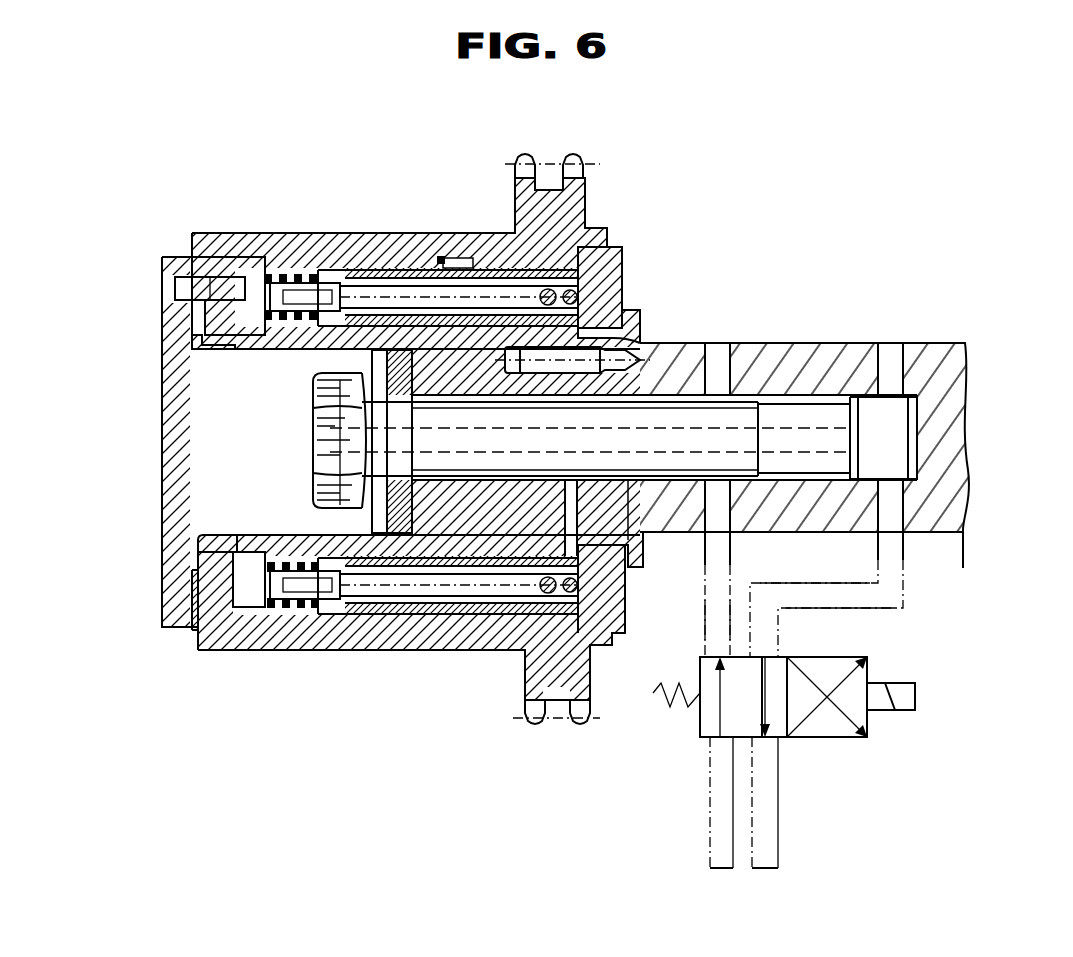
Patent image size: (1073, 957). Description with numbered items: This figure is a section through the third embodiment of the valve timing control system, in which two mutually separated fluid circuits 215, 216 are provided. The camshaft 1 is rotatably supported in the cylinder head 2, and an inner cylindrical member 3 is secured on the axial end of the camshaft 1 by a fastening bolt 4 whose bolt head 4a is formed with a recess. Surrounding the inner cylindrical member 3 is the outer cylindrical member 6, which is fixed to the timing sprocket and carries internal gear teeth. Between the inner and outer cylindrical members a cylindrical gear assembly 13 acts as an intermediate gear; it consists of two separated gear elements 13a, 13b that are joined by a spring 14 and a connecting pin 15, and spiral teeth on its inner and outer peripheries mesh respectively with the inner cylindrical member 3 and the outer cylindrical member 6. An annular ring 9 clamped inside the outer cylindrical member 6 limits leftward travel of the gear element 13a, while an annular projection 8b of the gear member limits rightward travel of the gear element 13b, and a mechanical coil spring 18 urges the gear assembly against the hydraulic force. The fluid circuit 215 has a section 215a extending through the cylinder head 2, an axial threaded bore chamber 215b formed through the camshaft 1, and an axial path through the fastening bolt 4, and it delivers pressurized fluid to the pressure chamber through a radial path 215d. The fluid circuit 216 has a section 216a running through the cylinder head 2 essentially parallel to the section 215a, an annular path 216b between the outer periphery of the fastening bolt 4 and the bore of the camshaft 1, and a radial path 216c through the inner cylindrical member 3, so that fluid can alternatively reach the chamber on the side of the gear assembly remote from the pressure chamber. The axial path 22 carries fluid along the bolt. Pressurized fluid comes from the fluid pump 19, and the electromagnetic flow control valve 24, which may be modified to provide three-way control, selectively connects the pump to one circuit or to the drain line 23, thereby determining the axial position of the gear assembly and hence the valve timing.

The camshaft 1 is at (778, 345).
The cylinder head 2 is at (940, 558).
The inner cylindrical member 3 is at (495, 532).
The fastening bolt 4 is at (595, 480).
The bolt head 4a is at (318, 489).
The outer cylindrical member 6 is at (376, 233).
The annular projection 8b is at (518, 304).
The annular ring 9 is at (192, 250).
The cylindrical gear assembly 13 is at (393, 248).
The gear element 13a is at (288, 268).
The gear element 13b is at (425, 252).
The spring 14 is at (273, 288).
The connecting pin 15 is at (238, 268).
The mechanical coil spring 18 is at (557, 323).
The fluid pump 19 is at (753, 892).
The axial path 22 is at (737, 425).
The drain line 23 is at (780, 822).
The electromagnetic flow control valve 24 is at (884, 731).
The fluid circuit 215 is at (892, 618).
The section of fluid circuit 215a is at (796, 602).
The axial threaded bore chamber 215b is at (905, 418).
The radial path 215d is at (250, 342).
The fluid circuit 216 is at (698, 612).
The section of fluid circuit 216a is at (742, 574).
The annular path 216b is at (626, 480).
The radial path 216c is at (572, 560).